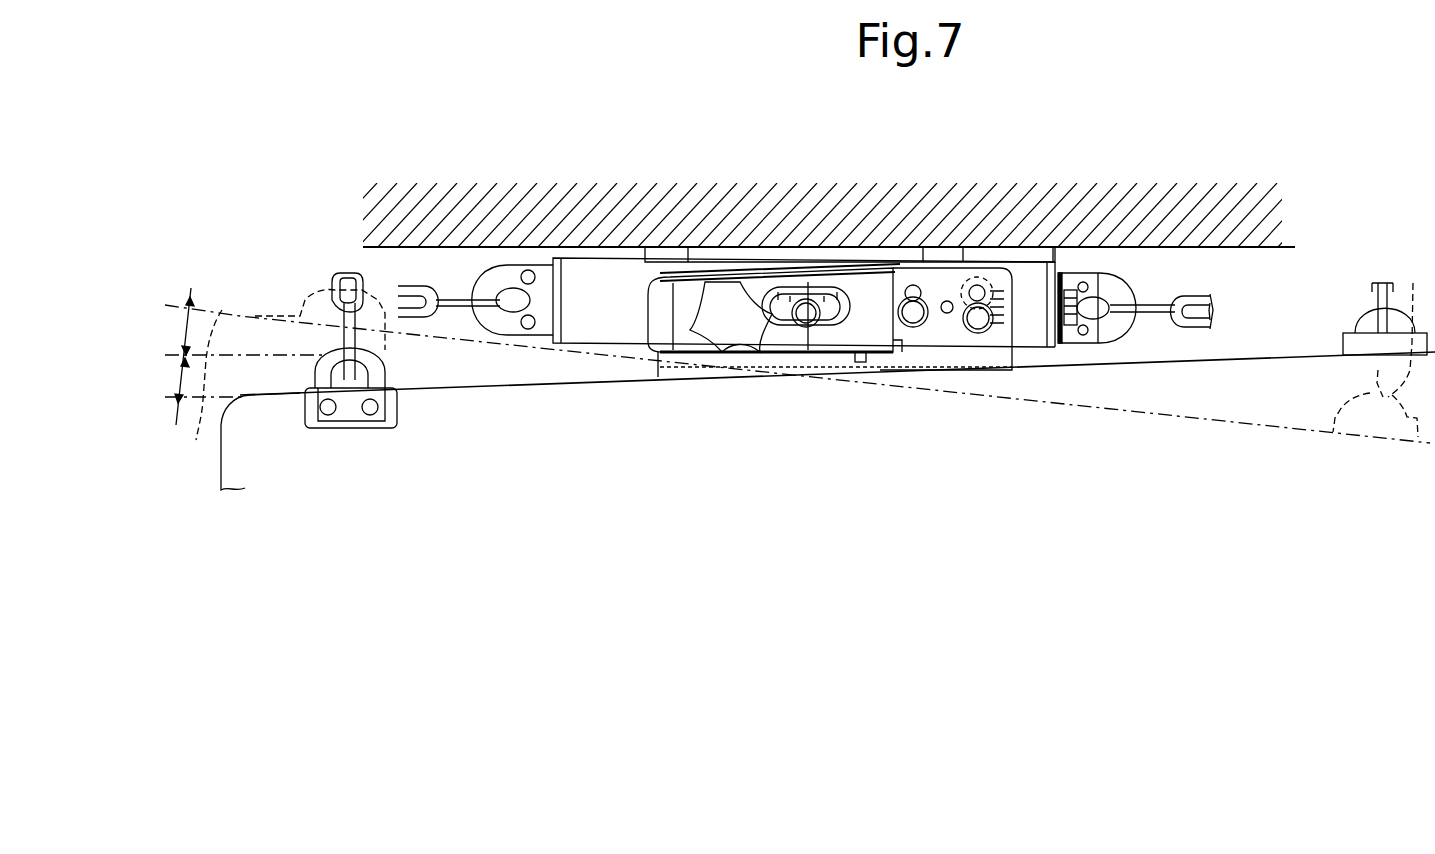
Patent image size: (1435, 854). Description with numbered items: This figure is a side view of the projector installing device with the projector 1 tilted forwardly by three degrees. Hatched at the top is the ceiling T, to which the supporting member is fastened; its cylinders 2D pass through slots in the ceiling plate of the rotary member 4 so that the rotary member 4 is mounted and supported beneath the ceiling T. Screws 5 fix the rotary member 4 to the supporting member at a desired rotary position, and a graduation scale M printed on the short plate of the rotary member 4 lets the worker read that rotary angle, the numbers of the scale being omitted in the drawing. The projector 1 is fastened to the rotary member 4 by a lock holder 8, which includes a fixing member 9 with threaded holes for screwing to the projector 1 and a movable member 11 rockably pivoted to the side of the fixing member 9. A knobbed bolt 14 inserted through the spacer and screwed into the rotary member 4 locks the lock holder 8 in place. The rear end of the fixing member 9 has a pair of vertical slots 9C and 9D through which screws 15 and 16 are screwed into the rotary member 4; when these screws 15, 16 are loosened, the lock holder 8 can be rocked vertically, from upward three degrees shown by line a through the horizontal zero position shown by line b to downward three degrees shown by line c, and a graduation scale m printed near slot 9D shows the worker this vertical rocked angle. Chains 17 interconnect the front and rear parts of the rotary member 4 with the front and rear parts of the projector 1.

The projector 1 is at (1270, 362).
The cylinders 2D is at (667, 256).
The rotary member 4 is at (598, 332).
The screws 5 is at (805, 317).
The lock holder 8 is at (852, 468).
The fixing member 9 is at (947, 362).
The vertical slot 9C is at (913, 290).
The vertical slot 9D is at (977, 287).
The movable member 11 is at (883, 348).
The knobbed bolt 14 is at (727, 332).
The screw 15 is at (912, 318).
The screw 16 is at (978, 322).
The chains 17 is at (320, 292).
The ceiling T is at (1237, 247).
The graduation scale M is at (840, 287).
The graduation scale m is at (1006, 302).
The line a is at (222, 310).
The line b is at (176, 354).
The line c is at (206, 415).